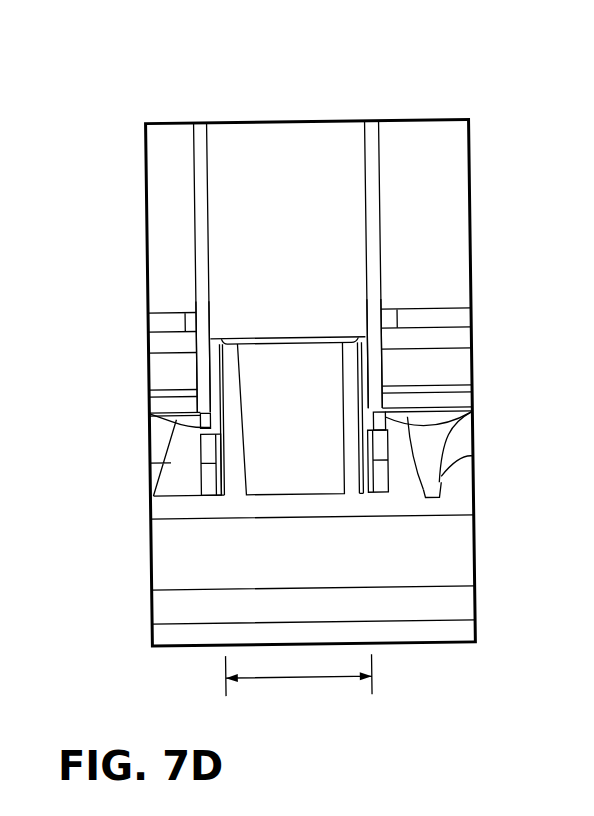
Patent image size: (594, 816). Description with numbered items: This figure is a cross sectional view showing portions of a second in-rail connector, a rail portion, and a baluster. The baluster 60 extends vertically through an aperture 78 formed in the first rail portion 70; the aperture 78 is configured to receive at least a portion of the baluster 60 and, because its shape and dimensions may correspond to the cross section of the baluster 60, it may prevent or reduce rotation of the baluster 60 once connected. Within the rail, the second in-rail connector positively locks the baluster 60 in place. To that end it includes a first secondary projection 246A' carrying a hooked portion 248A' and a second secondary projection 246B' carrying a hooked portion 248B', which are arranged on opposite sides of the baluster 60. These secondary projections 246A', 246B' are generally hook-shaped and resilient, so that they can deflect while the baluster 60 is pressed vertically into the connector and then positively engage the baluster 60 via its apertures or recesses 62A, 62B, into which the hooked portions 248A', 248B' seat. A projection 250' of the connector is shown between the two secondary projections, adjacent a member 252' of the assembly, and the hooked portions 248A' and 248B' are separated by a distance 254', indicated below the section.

The baluster 60 is at (378, 156).
The aperture/recess 62A is at (204, 399).
The aperture/recess 62B is at (377, 405).
The first rail portion 70 is at (439, 301).
The aperture 78 is at (399, 318).
The hooked portion 248A' is at (146, 427).
The hooked portion 248B' is at (460, 433).
The first secondary projection 246A' is at (145, 485).
The second secondary projection 246B' is at (468, 485).
The projection 250' is at (321, 462).
The cup member 252' is at (288, 381).
The distance 254' is at (299, 685).